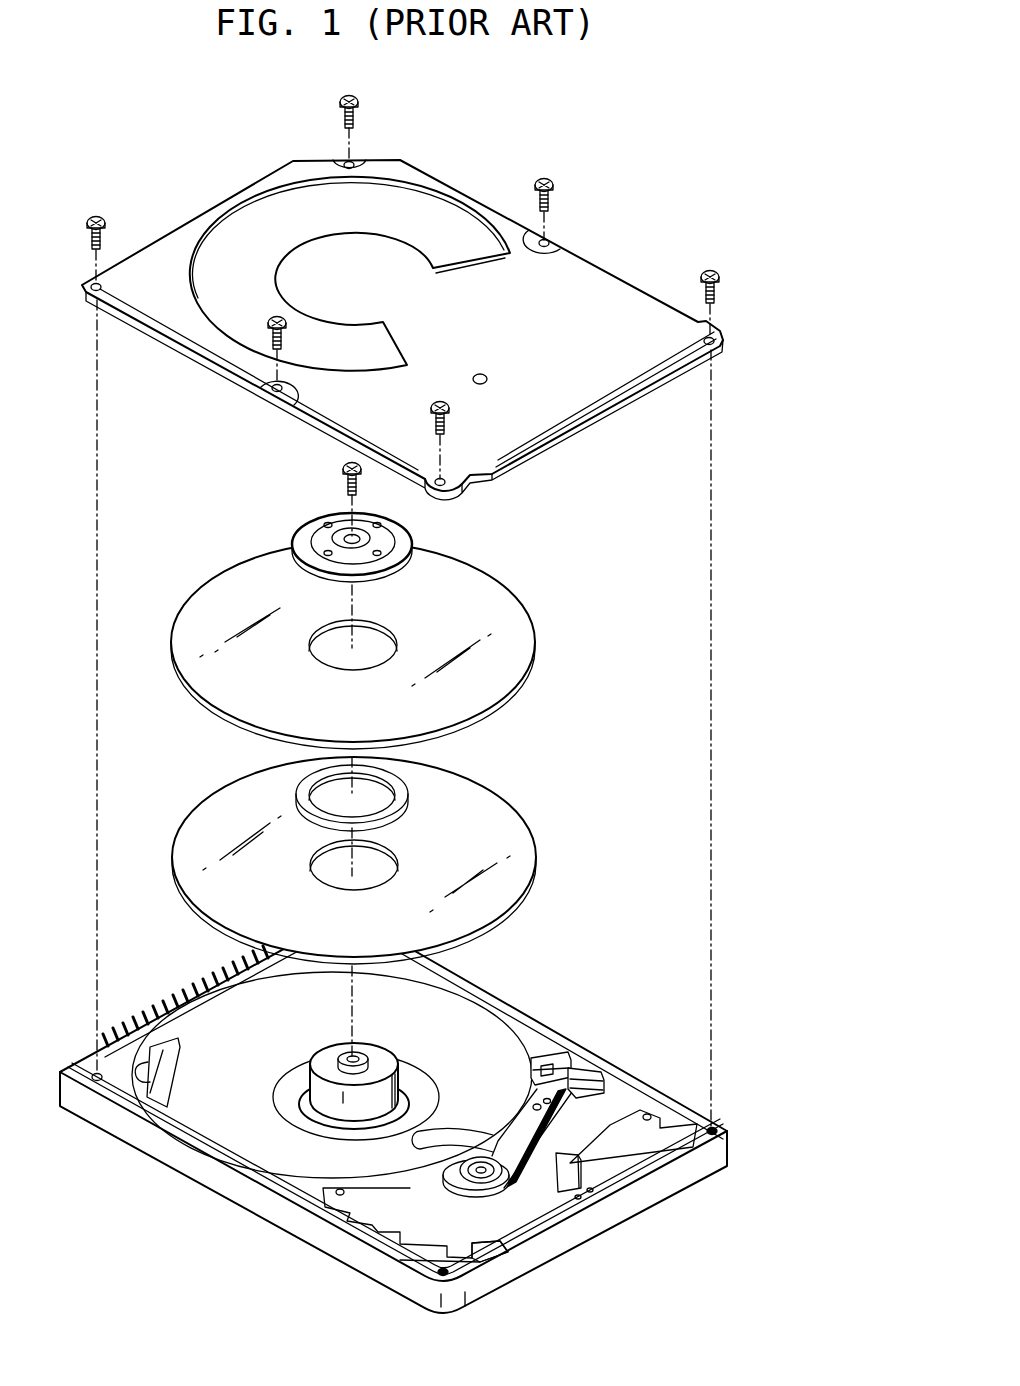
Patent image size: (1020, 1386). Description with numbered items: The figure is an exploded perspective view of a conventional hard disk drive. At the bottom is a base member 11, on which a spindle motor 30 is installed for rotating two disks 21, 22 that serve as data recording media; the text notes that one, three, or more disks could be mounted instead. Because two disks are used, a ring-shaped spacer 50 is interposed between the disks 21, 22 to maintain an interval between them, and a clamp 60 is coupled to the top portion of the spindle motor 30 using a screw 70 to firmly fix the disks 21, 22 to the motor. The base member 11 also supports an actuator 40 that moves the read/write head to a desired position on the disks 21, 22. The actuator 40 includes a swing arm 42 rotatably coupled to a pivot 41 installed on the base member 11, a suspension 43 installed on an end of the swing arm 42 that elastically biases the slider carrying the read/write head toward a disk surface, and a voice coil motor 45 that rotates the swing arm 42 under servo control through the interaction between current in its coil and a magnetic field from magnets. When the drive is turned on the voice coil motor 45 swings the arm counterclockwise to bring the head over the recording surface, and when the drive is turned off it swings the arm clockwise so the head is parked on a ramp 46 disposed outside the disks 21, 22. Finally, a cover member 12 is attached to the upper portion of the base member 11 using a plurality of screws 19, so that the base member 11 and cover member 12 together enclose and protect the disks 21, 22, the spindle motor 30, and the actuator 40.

The base member 11 is at (684, 1186).
The cover member 12 is at (620, 292).
The screws 19 is at (710, 268).
The disk 21 is at (518, 825).
The disk 22 is at (517, 608).
The spindle motor 30 is at (310, 1118).
The actuator 40 is at (560, 1080).
The pivot 41 is at (480, 1168).
The swing arm 42 is at (512, 1137).
The suspension 43 is at (563, 1062).
The voice coil motor 45 is at (491, 1260).
The ramp 46 is at (529, 1067).
The spacer 50 is at (408, 798).
The clamp 60 is at (291, 527).
The screw 70 is at (341, 466).